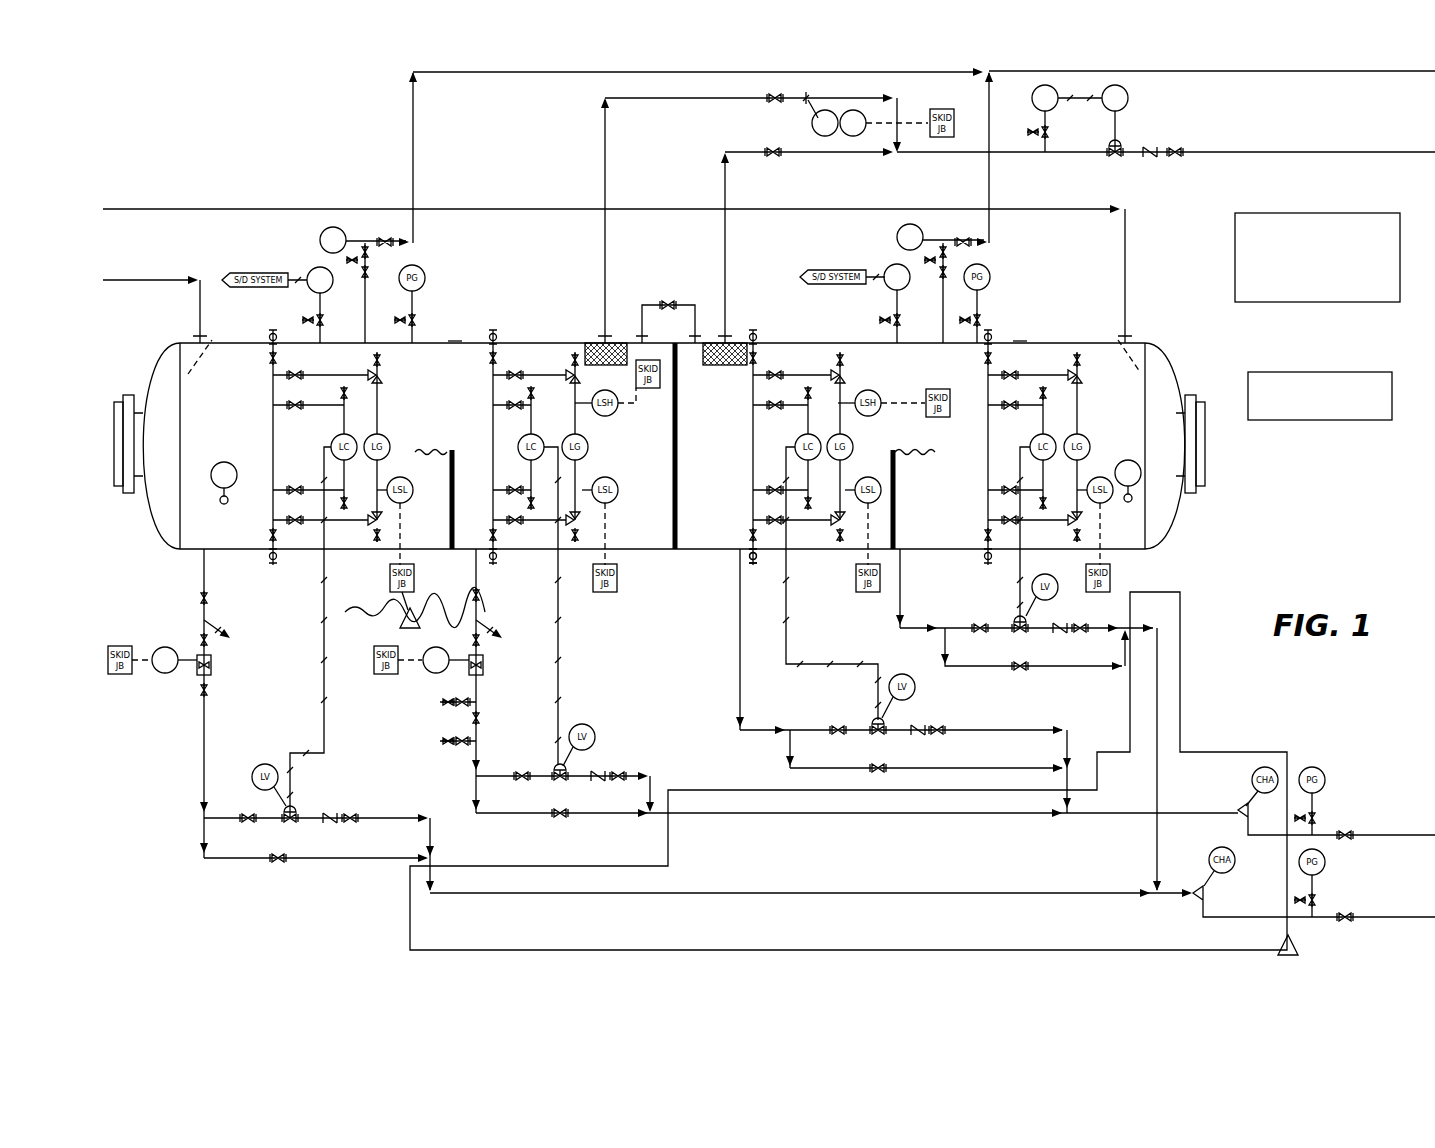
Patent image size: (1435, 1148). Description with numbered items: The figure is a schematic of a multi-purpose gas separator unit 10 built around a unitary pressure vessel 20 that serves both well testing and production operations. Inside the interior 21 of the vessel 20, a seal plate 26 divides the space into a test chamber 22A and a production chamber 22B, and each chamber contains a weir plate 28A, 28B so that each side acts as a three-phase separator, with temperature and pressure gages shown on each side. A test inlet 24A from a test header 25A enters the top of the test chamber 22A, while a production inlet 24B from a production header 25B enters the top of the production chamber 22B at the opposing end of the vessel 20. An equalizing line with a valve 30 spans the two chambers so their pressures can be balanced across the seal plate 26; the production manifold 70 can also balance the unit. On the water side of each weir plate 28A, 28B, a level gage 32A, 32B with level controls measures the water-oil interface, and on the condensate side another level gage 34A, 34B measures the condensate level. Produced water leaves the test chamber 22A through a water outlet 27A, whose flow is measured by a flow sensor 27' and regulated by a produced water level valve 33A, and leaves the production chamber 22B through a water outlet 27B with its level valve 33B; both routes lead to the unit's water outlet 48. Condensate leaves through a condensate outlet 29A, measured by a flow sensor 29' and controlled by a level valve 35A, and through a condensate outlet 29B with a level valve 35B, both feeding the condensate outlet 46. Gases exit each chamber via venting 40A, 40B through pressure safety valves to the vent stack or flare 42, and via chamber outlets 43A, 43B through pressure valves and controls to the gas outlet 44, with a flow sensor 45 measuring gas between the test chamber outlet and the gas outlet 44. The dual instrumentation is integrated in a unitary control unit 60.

The multi-purpose gas separator unit 10 is at (246, 76).
The pressure vessel 20 is at (1168, 348).
The interior 21 is at (1165, 514).
The test chamber 22A is at (455, 343).
The production chamber 22B is at (1020, 343).
The test inlet 24A is at (200, 332).
The production inlet 24B is at (1125, 338).
The test header 25A is at (150, 262).
The production header 25B is at (611, 190).
The seal plate 26 is at (680, 521).
The water outlet of the test chamber 27A is at (203, 560).
The water outlet of the production chamber 27B is at (900, 560).
The flow sensor 27' is at (159, 684).
The weir plate 28A is at (456, 448).
The weir plate 28B is at (895, 452).
The condensate outlet of the test chamber 29A is at (480, 575).
The condensate outlet of the production chamber 29B is at (740, 562).
The flow sensor 29' is at (457, 678).
The equalizing line with a valve 30 is at (666, 304).
The level gage 32A is at (378, 432).
The level gage 32B is at (1078, 432).
The level valve 33A is at (258, 767).
The produced water level valve 33B is at (1057, 596).
The level gage 34A is at (589, 450).
The level gage 34B is at (840, 432).
The level valve 35A is at (590, 725).
The level valve 35B is at (915, 690).
The venting 40A is at (364, 218).
The venting 40B is at (1012, 260).
The vent stack or flare 42 is at (1212, 85).
The chamber outlet 43A is at (605, 338).
The chamber outlet 43B is at (726, 338).
The gas outlet 44 is at (1080, 137).
The flow sensor 45 is at (822, 78).
The condensate outlet 46 is at (1336, 803).
The water outlet 48 is at (932, 884).
The control unit 60 is at (1338, 302).
The production manifold 70 is at (1340, 421).